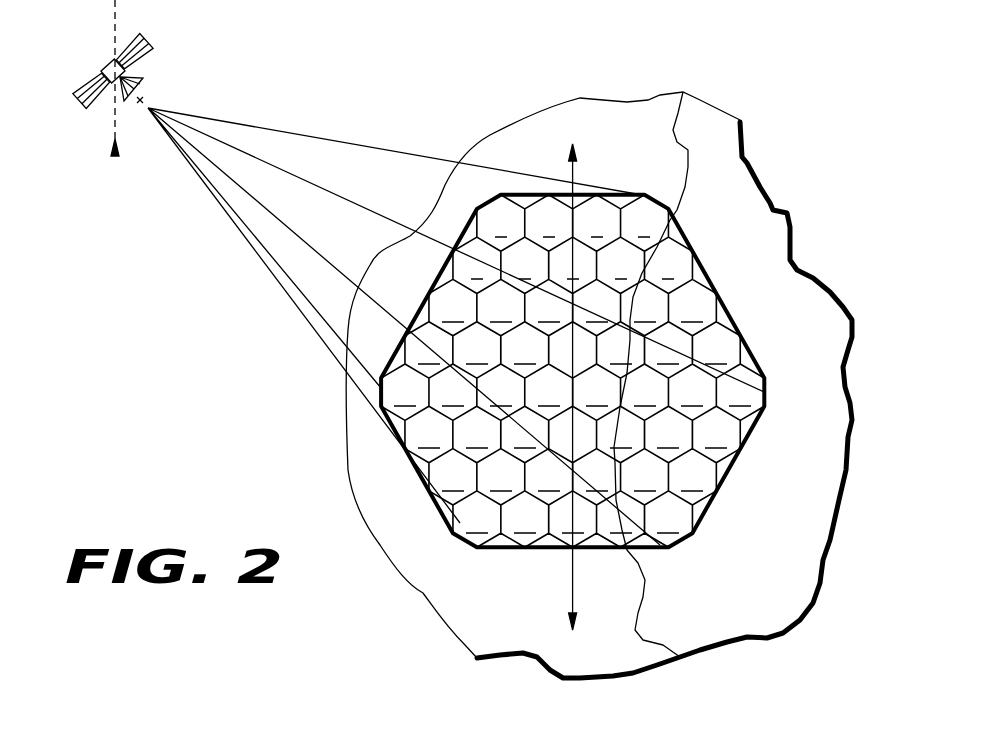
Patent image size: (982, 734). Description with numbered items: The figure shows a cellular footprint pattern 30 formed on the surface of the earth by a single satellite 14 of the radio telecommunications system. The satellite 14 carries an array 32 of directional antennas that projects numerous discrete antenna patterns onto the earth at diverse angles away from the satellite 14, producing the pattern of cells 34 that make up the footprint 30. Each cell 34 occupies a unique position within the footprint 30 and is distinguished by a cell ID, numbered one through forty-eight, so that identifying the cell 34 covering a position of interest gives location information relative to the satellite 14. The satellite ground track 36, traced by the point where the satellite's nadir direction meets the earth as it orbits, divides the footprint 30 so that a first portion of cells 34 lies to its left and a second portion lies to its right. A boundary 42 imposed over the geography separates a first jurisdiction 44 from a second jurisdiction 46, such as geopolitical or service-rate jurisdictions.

The satellite 14 is at (141, 34).
The array of directional antennas 32 is at (144, 88).
The cellular footprint pattern 30 is at (752, 440).
The cells 34 is at (463, 247).
The satellite ground track 36 is at (576, 172).
The boundary 42 is at (690, 147).
The first jurisdiction 44 is at (782, 234).
The second jurisdiction 46 is at (525, 147).